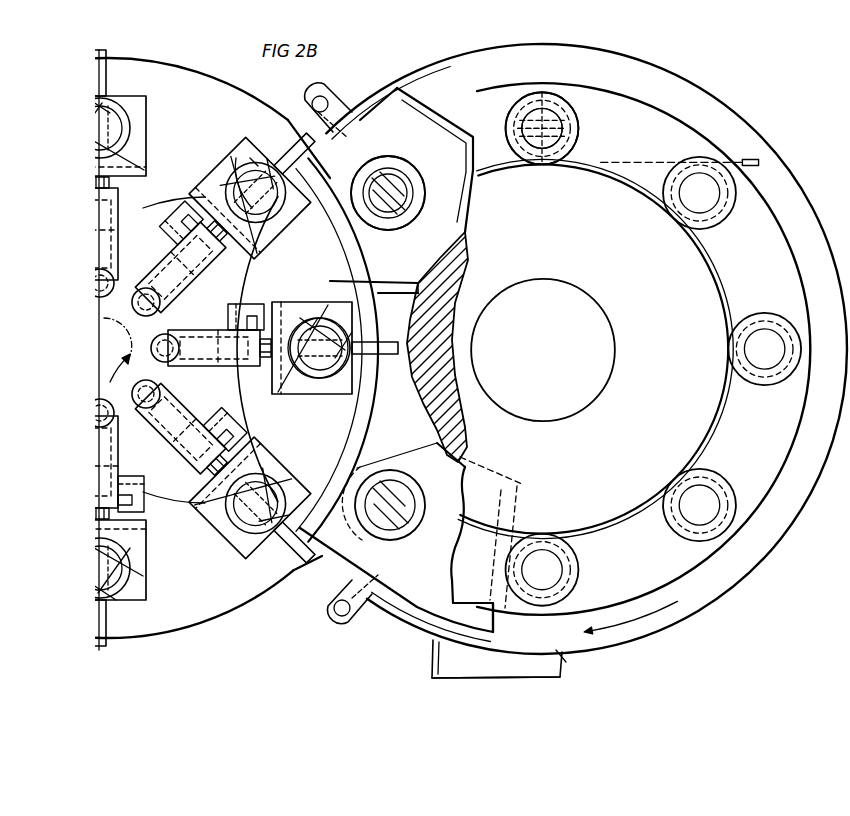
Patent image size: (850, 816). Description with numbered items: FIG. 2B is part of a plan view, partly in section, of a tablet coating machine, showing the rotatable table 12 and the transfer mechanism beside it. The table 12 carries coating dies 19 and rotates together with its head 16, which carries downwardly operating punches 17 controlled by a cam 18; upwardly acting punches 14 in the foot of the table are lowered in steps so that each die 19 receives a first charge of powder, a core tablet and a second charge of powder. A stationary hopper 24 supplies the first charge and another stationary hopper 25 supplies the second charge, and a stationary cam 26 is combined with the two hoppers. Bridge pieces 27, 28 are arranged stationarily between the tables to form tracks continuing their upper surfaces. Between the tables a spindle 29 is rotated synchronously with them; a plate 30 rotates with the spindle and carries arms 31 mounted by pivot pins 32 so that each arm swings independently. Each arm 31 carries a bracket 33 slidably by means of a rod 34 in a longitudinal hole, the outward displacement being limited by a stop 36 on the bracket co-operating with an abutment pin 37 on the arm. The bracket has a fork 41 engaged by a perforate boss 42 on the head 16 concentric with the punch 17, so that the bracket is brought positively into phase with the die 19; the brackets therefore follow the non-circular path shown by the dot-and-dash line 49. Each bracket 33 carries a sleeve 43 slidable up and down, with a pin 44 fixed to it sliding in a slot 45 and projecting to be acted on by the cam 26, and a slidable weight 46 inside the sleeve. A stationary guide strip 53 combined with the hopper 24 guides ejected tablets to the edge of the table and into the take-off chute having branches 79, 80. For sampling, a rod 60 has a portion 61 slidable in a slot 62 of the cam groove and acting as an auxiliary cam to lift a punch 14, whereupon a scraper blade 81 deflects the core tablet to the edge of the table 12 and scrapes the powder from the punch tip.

The rotatable table 12 is at (712, 98).
The upwardly acting punch 14 is at (541, 160).
The head 16 is at (633, 106).
The downwardly operating punch 17 is at (300, 365).
The cam 18 is at (655, 419).
The coating die 19 is at (418, 186).
The stationary hopper 24 is at (420, 452).
The stationary hopper 25 is at (436, 108).
The stationary cam 26 is at (366, 258).
The bridge piece 27 is at (141, 70).
The bridge piece 28 is at (280, 575).
The spindle 29 is at (118, 341).
The plate 30 is at (142, 432).
The arm 31 is at (214, 262).
The pivot pin 32 is at (150, 350).
The bracket 33 is at (215, 176).
The rod 34 is at (238, 242).
The stop 36 is at (178, 224).
The abutment pin 37 is at (186, 215).
The fork 41 is at (262, 236).
The perforate boss 42 is at (322, 382).
The sleeve 43 is at (250, 158).
The pin 44 is at (298, 152).
The slot 45 is at (312, 170).
The weight 46 is at (280, 196).
The path 49 is at (172, 558).
The stationary guide strip 53 is at (503, 620).
The rod 60 is at (568, 112).
The portion 61 is at (570, 129).
The slot 62 is at (568, 142).
The chute 79 is at (562, 656).
The chute 80 is at (496, 677).
The scraper blade 81 is at (662, 165).